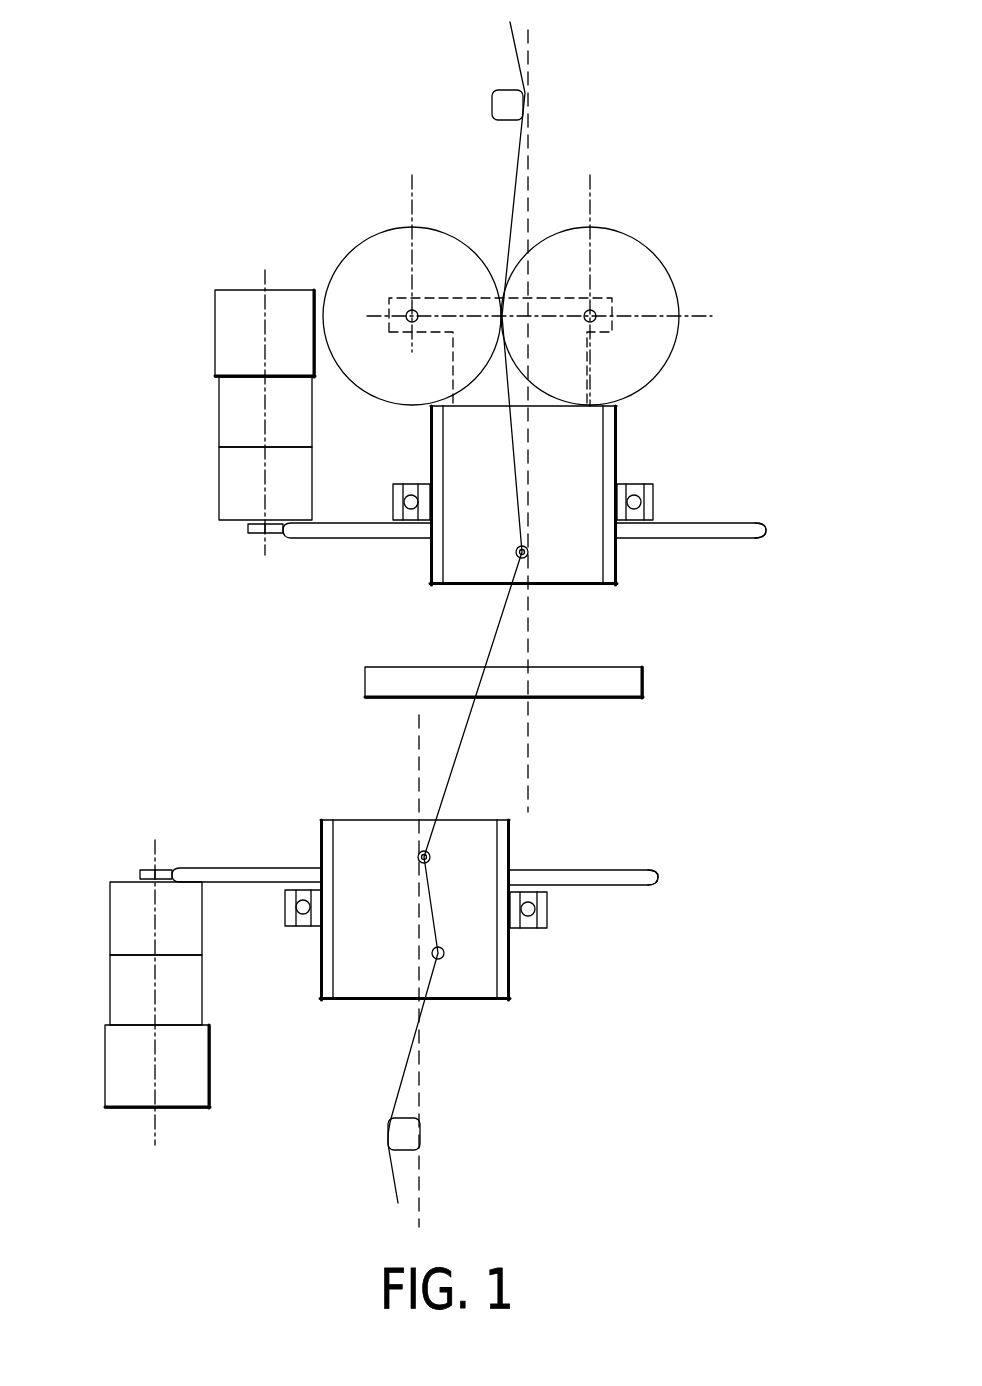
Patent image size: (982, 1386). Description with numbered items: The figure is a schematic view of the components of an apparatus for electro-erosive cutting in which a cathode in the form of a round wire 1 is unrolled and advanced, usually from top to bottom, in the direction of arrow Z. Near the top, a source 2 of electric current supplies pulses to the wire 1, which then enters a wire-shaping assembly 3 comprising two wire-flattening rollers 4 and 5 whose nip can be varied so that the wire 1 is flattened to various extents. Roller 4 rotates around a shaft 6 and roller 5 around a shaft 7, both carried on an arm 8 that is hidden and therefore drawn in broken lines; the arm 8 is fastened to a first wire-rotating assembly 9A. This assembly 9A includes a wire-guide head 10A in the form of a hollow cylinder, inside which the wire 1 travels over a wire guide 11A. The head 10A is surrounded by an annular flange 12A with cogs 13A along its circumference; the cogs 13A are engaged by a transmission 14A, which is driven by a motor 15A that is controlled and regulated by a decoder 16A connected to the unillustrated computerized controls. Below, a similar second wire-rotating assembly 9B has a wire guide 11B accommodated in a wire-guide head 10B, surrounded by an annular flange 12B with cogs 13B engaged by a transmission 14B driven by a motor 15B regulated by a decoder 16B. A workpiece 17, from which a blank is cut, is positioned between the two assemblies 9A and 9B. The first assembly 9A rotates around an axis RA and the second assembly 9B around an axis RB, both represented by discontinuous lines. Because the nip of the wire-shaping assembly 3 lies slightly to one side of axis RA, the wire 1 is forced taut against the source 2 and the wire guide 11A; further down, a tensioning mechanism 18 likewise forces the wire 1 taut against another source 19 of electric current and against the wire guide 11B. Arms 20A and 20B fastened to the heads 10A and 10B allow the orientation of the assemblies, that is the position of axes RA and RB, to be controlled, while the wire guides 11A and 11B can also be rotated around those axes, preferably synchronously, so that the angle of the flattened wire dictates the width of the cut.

The round wire 1 is at (514, 40).
The source of electric current 2 is at (493, 105).
The wire-shaping assembly 3 is at (364, 198).
The wire-flattening roller 4 is at (661, 294).
The wire-flattening roller 5 is at (362, 250).
The shaft 6 is at (593, 312).
The shaft 7 is at (414, 312).
The arm 8 is at (538, 345).
The first wire-rotating assembly 9A is at (494, 454).
The second wire-rotating assembly 9B is at (400, 953).
The wire-guide head 10A is at (612, 425).
The wire-guide head 10B is at (508, 980).
The wire guide 11A is at (518, 557).
The wire guide 11B is at (430, 852).
The annular flange 12A is at (742, 530).
The annular flange 12B is at (584, 880).
The cogs 13A is at (764, 533).
The cogs 13B is at (661, 878).
The transmission 14A is at (222, 498).
The transmission 14B is at (210, 1076).
The motor 15A is at (228, 395).
The motor 15B is at (125, 990).
The decoder 16A is at (222, 343).
The decoder 16B is at (128, 903).
The workpiece 17 is at (648, 687).
The tensioning mechanism 18 is at (442, 960).
The source of electric current 19 is at (408, 1135).
The arm 20A is at (656, 500).
The arm 20B is at (548, 916).
The direction of wire advance Z is at (563, 88).
The axis of rotation RA is at (530, 757).
The axis of rotation RB is at (418, 760).